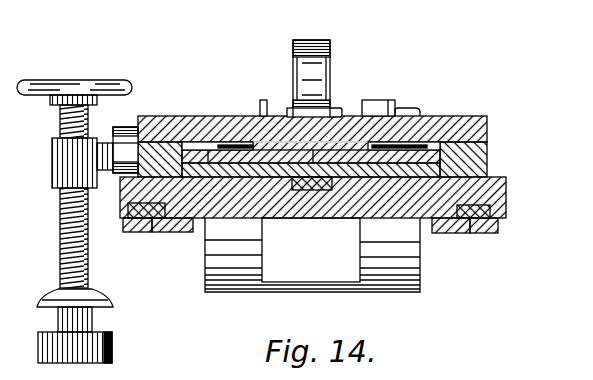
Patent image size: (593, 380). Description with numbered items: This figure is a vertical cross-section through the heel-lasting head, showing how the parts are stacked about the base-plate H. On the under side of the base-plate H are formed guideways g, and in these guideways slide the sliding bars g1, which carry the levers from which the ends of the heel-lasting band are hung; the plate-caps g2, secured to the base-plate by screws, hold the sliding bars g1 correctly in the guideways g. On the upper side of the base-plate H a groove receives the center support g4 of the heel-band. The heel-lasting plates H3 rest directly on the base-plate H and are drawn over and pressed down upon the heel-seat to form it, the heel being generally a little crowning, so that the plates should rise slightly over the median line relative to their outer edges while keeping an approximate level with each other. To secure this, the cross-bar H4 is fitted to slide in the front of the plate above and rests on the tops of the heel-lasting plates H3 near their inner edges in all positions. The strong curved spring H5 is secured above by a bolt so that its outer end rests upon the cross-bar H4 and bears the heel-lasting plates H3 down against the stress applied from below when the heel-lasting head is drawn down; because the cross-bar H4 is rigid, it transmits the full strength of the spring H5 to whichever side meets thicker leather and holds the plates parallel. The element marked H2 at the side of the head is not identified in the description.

The base-plate H is at (121, 200).
The adjusting screw with handle H2 is at (74, 221).
The heel-lasting plates H3 is at (446, 108).
The cross-bar H4 is at (275, 112).
The strong curved spring H5 is at (353, 65).
The guideways g is at (128, 227).
The sliding bars g1 is at (156, 229).
The plate-caps g2 is at (452, 229).
The center support of the heel-band g4 is at (304, 196).